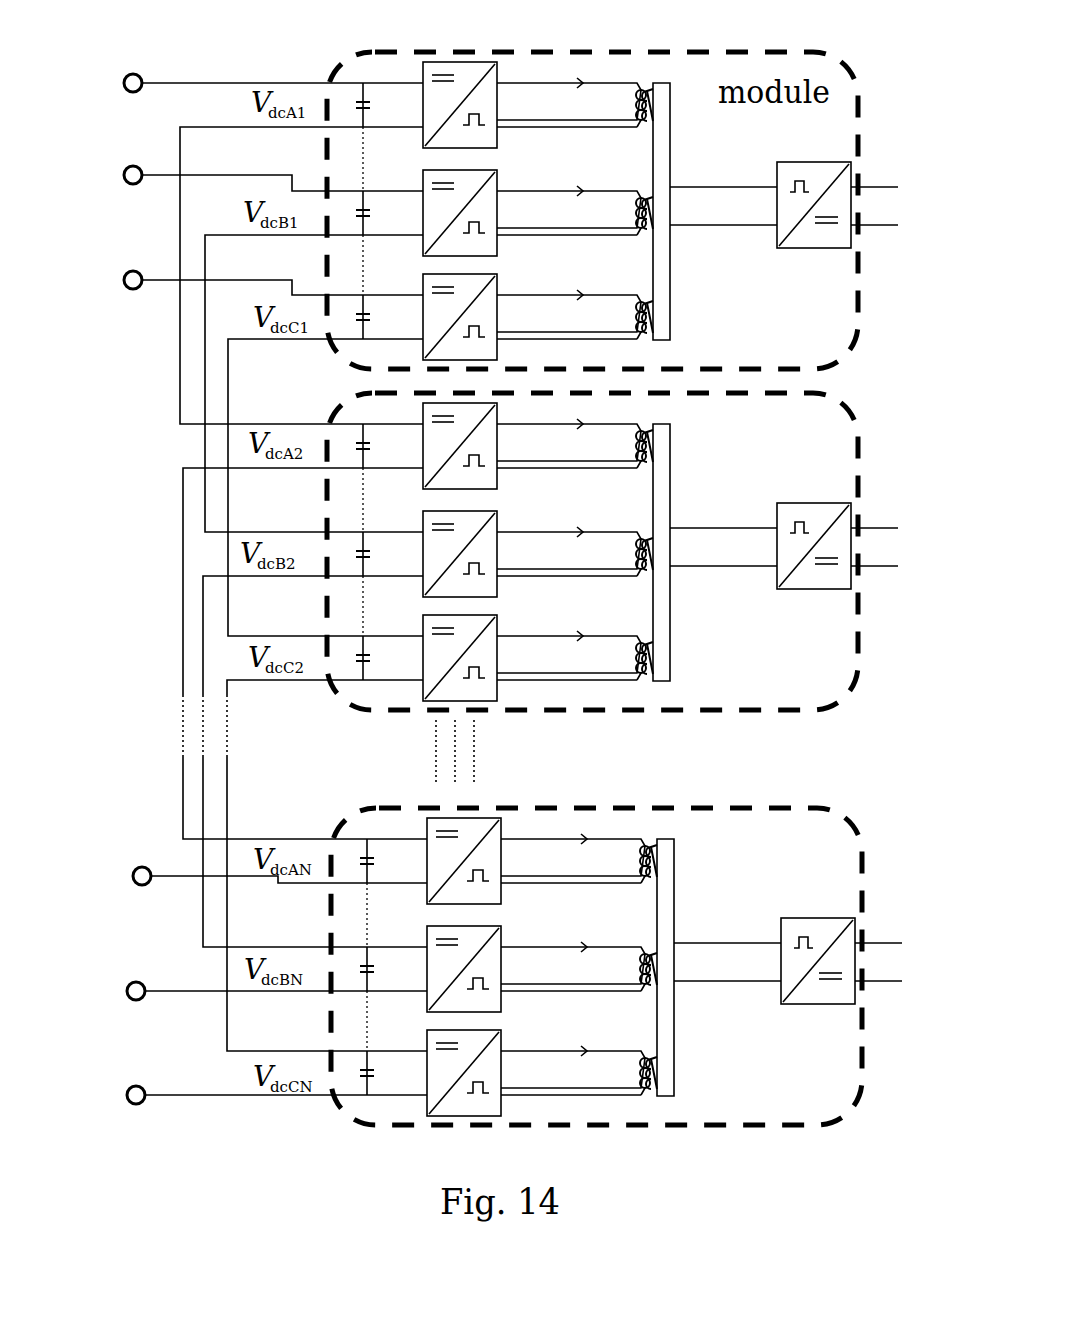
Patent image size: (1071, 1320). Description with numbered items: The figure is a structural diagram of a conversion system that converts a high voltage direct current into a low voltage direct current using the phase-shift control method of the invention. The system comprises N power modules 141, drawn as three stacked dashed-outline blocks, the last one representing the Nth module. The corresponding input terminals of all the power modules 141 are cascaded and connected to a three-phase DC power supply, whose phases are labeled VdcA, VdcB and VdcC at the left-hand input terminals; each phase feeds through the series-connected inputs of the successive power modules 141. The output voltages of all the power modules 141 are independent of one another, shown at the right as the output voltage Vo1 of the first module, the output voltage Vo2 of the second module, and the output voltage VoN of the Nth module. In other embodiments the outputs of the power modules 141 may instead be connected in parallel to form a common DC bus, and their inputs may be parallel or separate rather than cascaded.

The power module 141 is at (848, 418).
The DC input voltage A VdcA is at (236, 80).
The DC input voltage B VdcB is at (235, 177).
The DC input voltage C VdcC is at (235, 282).
The output voltage of the first power module Vo1 is at (889, 206).
The output voltage of the second power module Vo2 is at (888, 547).
The output voltage of the Nth power module VoN is at (895, 966).